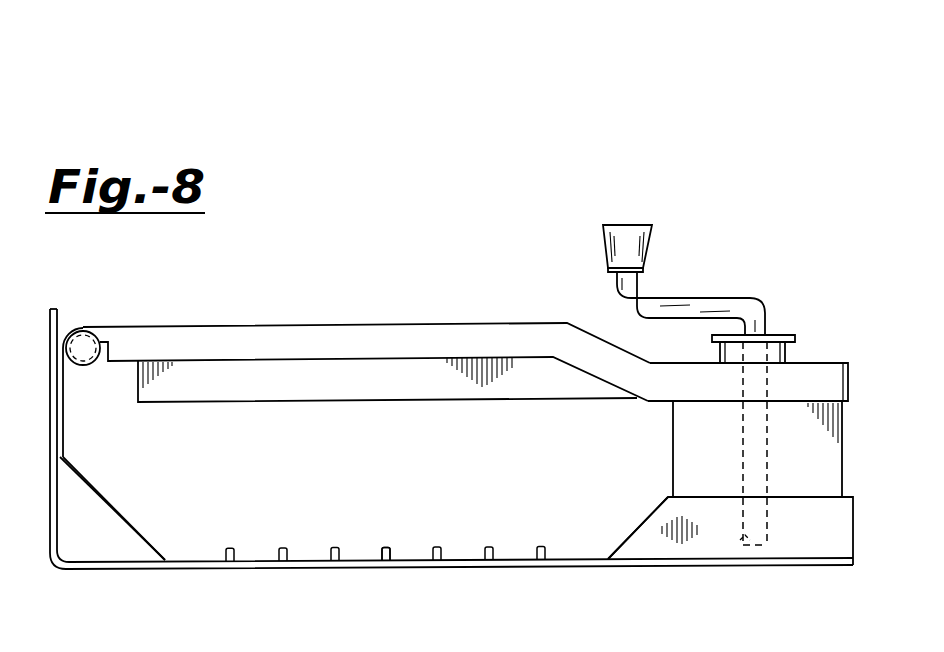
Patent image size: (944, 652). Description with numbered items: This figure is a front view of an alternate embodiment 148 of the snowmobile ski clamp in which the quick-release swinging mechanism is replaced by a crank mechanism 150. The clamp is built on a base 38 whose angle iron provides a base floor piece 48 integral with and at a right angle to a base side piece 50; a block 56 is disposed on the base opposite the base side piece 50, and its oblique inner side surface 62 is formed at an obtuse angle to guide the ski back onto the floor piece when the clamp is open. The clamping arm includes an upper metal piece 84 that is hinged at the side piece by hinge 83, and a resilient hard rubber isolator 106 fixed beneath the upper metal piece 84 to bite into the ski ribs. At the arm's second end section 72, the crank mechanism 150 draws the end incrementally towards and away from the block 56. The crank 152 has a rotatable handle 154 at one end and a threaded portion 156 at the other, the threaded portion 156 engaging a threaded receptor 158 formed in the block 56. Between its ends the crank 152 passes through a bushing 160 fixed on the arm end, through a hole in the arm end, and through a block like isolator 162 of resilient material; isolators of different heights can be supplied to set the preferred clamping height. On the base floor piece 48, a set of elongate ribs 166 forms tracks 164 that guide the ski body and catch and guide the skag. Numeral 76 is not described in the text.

The alternate embodiment 148 is at (690, 182).
The rotatable handle 154 is at (603, 242).
The crank mechanism 150 is at (716, 298).
The crank 152 is at (763, 304).
The bushing 160 is at (798, 348).
The second end section 72 is at (830, 363).
The block like isolator 162 is at (843, 442).
The block 56 is at (853, 523).
The inner side surface 62 is at (632, 532).
The threaded portion 156 is at (752, 553).
The threaded receptor 158 is at (737, 528).
The base floor piece 48 is at (465, 560).
The tracks 164 is at (361, 550).
The elongate ribs 166 is at (280, 548).
The base 38 is at (200, 571).
The inclined wall 76 is at (65, 453).
The base side piece 50 is at (48, 406).
The hinge 83 is at (81, 330).
The upper metal piece 84 is at (290, 326).
The hard rubber isolator 106 is at (368, 385).